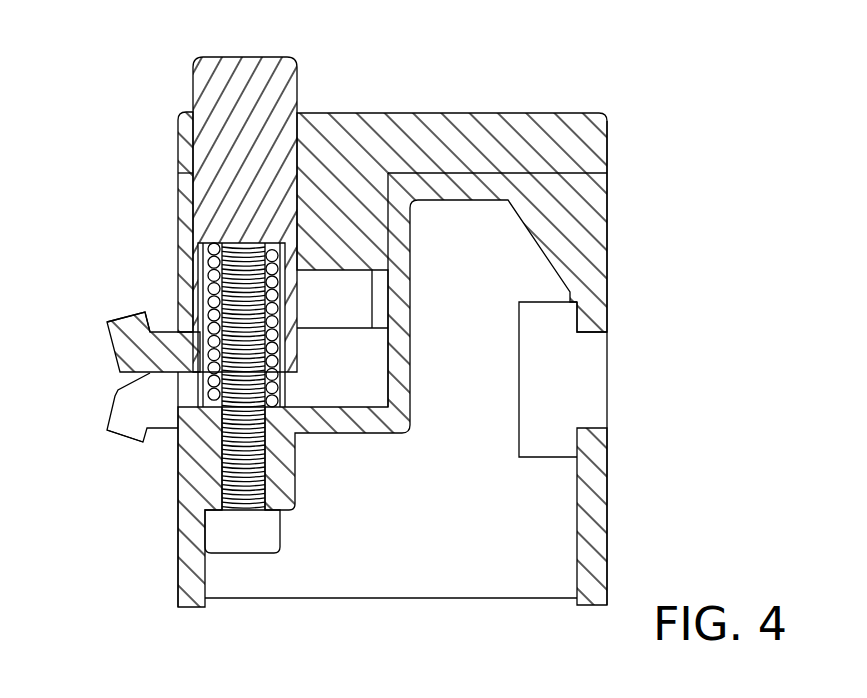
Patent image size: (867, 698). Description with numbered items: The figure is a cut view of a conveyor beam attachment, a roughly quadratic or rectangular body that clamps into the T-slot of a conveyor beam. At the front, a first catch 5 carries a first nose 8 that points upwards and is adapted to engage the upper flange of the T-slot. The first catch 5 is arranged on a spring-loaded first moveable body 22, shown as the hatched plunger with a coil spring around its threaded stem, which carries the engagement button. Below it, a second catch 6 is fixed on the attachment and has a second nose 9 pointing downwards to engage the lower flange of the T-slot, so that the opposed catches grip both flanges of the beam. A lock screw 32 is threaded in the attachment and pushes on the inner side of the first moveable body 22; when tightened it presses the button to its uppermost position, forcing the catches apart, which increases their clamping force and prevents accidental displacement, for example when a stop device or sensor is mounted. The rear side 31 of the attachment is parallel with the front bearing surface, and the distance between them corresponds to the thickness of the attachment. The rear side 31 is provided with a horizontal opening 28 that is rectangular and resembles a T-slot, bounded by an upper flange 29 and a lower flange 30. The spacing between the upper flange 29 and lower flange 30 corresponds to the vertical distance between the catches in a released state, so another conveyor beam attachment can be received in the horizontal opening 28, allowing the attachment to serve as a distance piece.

The first catch 5 is at (130, 338).
The second catch 6 is at (130, 413).
The first nose 8 is at (122, 318).
The second nose 9 is at (113, 440).
The first moveable body 22 is at (243, 143).
The horizontal opening 28 is at (647, 376).
The upper flange 29 is at (590, 318).
The lower flange 30 is at (590, 443).
The rear side 31 is at (607, 238).
The lock screw 32 is at (243, 530).